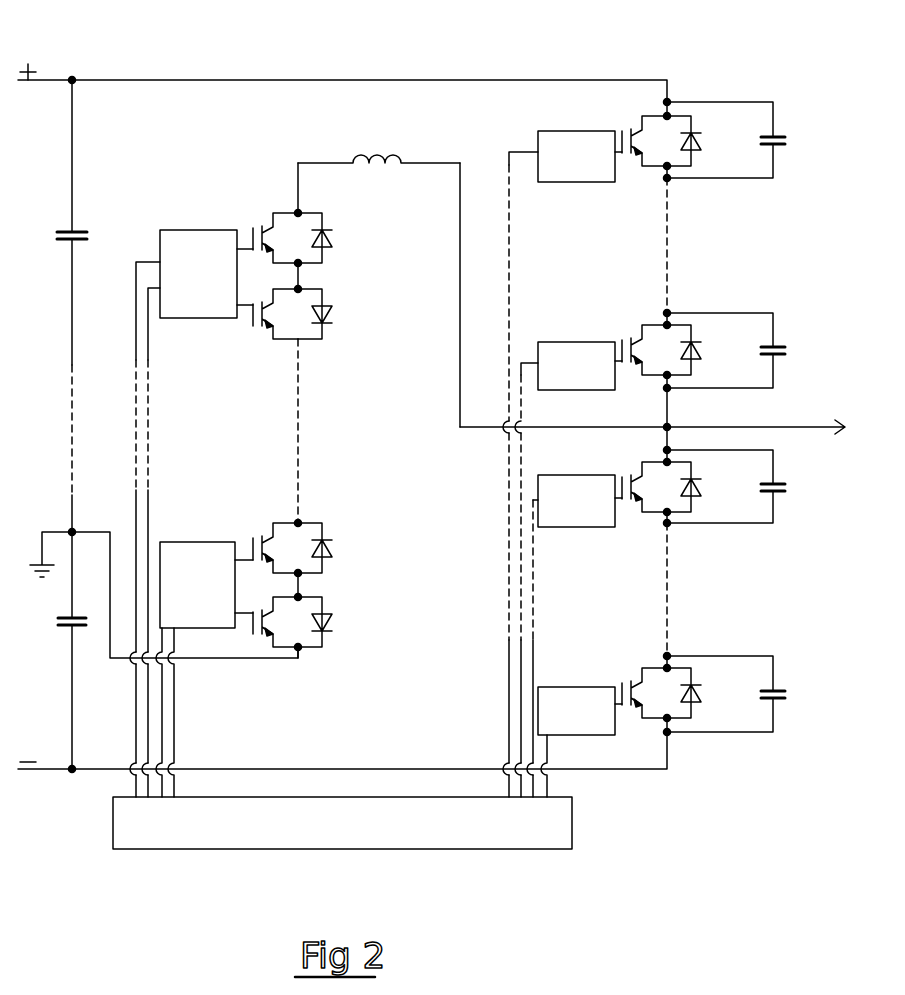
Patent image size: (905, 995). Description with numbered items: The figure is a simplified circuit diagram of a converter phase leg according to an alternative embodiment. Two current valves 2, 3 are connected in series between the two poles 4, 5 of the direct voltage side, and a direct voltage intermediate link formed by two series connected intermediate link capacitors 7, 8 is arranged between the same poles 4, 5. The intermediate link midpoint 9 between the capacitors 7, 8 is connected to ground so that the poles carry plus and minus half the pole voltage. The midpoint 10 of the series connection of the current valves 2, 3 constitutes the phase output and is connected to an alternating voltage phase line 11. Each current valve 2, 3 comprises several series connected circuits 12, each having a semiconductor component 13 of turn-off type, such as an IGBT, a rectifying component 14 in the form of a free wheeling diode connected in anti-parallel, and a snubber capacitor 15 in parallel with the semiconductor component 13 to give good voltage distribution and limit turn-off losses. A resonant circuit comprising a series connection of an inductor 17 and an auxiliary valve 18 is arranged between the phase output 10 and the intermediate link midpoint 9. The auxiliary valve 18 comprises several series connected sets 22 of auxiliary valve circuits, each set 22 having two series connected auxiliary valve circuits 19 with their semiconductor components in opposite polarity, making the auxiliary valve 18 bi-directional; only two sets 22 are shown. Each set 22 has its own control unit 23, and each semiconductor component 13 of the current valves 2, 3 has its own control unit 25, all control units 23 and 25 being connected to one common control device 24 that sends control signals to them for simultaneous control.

The current valve 2 is at (726, 233).
The current valve 3 is at (781, 597).
The pole 4 is at (72, 80).
The pole 5 is at (55, 772).
The intermediate link capacitor 7 is at (80, 230).
The intermediate link capacitor 8 is at (68, 628).
The intermediate link midpoint 9 is at (70, 530).
The midpoint 10 is at (664, 422).
The alternating voltage phase line 11 is at (815, 425).
The series connected circuit 12 is at (716, 125).
The semiconductor component of turn-off type 13 is at (644, 141).
The rectifying component 14 is at (690, 160).
The snubber capacitor 15 is at (782, 135).
The inductor 17 is at (393, 155).
The auxiliary valve 18 is at (279, 384).
The auxiliary valve circuit 19 is at (328, 507).
The set of auxiliary valve circuits 22 is at (315, 385).
The control unit 23 is at (207, 318).
The control device 24 is at (215, 850).
The control unit 25 is at (578, 182).